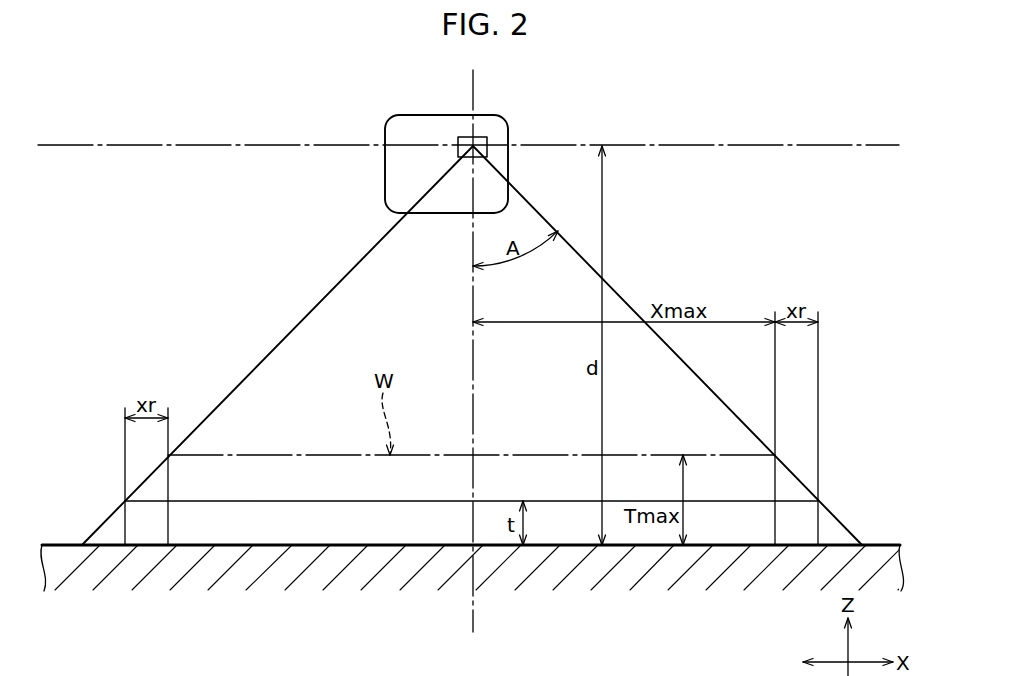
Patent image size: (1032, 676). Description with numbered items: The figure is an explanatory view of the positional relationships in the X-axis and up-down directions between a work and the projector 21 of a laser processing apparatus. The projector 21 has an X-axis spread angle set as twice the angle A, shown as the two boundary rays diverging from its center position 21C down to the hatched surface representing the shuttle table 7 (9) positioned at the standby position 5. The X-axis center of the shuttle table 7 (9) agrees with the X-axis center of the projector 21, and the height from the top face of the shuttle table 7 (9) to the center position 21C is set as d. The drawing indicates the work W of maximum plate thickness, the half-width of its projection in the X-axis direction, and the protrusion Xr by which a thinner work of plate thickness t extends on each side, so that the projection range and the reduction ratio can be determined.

The projector 21 is at (411, 117).
The center position of the projector 21C is at (479, 138).
The standby position 5 is at (242, 418).
The shuttle table 7 is at (492, 545).
The shuttle table 9 is at (875, 560).